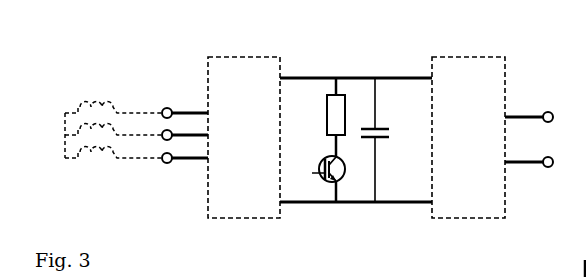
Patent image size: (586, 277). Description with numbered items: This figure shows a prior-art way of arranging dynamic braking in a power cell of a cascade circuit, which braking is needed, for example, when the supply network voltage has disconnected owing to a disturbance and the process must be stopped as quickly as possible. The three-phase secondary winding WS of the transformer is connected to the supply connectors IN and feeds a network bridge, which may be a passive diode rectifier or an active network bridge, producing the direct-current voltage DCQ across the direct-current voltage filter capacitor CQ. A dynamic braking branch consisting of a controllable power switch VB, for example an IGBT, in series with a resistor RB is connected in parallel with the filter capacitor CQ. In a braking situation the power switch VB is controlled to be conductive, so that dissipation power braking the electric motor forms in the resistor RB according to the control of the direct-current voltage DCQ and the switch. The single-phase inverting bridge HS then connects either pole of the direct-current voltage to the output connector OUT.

The three-phase secondary winding WS is at (113, 121).
The supply connectors IN is at (182, 126).
The direct-current voltage DCQ is at (356, 127).
The resistor RB is at (321, 117).
The controllable power switch VB is at (321, 170).
The direct-current voltage filter capacitor CQ is at (384, 140).
The single-phase inverting bridge HS is at (468, 126).
The output connector OUT is at (530, 130).